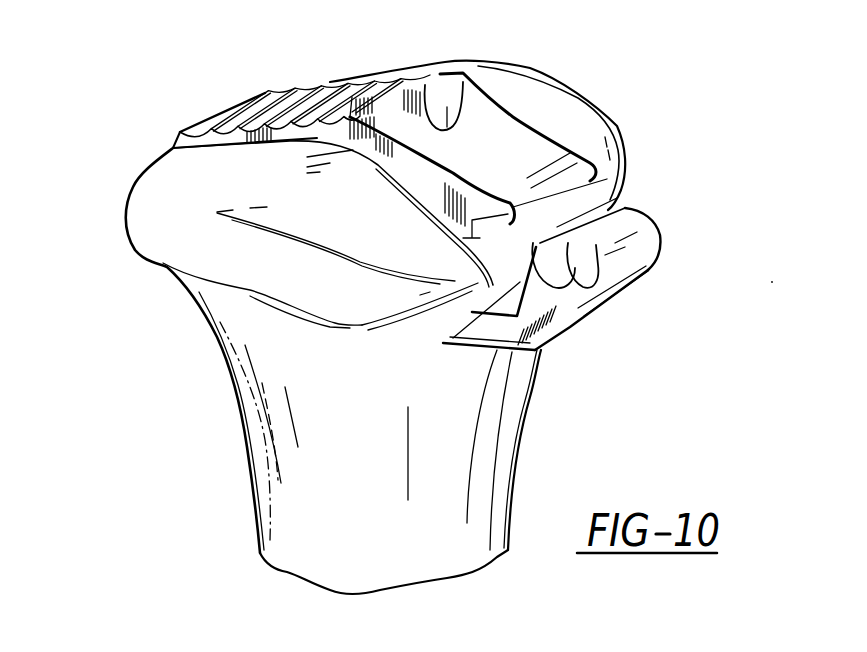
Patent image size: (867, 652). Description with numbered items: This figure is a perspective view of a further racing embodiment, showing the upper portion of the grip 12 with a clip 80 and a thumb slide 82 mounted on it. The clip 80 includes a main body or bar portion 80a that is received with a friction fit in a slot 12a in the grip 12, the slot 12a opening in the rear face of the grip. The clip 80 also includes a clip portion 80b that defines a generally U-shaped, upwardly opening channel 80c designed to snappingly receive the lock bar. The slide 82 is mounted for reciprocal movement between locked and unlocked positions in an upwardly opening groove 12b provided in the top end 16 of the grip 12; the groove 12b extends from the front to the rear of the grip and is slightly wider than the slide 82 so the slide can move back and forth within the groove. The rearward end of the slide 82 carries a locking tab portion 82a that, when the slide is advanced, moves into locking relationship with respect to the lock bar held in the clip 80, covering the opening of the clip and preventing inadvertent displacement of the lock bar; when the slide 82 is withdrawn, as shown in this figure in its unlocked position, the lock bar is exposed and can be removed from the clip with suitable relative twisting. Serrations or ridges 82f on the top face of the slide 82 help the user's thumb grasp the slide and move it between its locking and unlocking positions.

The grip 12 is at (226, 410).
The slot 12a is at (468, 322).
The groove 12b is at (442, 212).
The top end 16 is at (133, 184).
The clip 80 is at (597, 282).
The bar portion 80a is at (505, 347).
The clip portion 80b is at (618, 292).
The channel 80c is at (587, 288).
The thumb slide 82 is at (263, 65).
The locking tab portion 82a is at (556, 157).
The serrations or ridges 82f is at (263, 92).